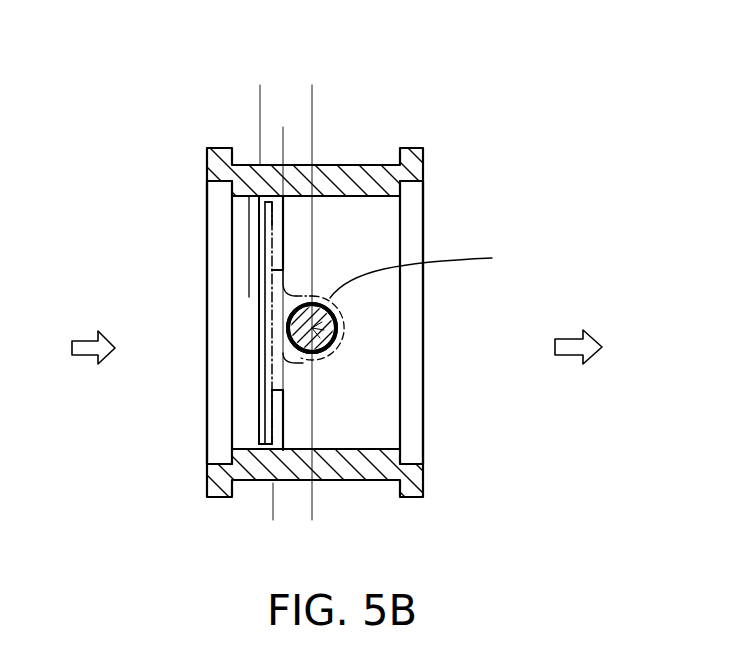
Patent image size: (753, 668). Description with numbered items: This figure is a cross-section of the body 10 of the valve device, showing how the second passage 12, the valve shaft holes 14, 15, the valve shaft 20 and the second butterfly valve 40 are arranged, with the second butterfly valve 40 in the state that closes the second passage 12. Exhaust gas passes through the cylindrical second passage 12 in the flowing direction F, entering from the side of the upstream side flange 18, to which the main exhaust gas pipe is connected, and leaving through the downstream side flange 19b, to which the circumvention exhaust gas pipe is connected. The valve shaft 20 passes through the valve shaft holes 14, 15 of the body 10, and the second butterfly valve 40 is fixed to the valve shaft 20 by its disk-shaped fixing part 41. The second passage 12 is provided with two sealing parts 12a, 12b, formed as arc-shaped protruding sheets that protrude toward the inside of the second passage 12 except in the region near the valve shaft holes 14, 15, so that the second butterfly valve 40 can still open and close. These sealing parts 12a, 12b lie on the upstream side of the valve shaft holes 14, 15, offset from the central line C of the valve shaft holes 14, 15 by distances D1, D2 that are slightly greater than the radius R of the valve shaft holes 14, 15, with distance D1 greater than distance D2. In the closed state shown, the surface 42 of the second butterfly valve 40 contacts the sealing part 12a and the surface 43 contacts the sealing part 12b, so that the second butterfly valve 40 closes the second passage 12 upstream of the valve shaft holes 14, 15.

The body 10 is at (416, 142).
The downstream side flange 19b is at (424, 182).
The upstream side flange 18 is at (207, 466).
The second passage 12 is at (383, 450).
The sealing part 12a is at (258, 220).
The sealing part 12b is at (275, 430).
The second butterfly valve 40 is at (250, 372).
The surface 42 is at (259, 252).
The surface 43 is at (263, 404).
The fixing part 41 is at (425, 269).
The valve shaft hole 14 is at (340, 329).
The valve shaft hole 15 is at (312, 328).
The valve shaft 20 is at (343, 338).
The central line C is at (318, 335).
The distance D1 is at (340, 94).
The distance D2 is at (242, 515).
The radius R is at (263, 132).
The flowing direction F is at (341, 335).